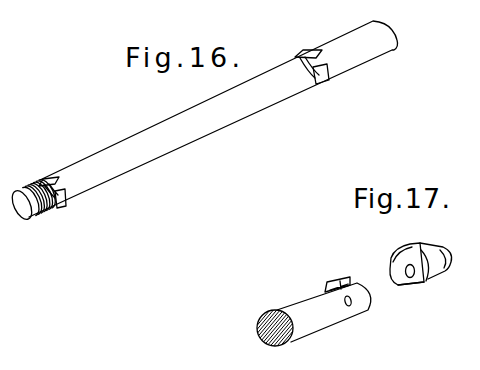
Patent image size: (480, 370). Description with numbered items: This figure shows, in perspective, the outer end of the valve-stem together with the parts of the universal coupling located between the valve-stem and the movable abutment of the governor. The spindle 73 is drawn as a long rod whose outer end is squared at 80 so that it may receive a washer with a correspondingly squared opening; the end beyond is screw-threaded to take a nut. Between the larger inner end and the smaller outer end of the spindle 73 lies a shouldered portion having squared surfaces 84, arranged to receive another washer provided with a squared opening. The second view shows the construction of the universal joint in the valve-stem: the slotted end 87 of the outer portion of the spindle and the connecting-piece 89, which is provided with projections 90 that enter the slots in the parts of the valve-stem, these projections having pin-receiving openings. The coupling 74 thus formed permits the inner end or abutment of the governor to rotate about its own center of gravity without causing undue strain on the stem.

In FIG. 16, the spindle 73 is at (191, 138).
In FIG. 16, the squared outer end 80 is at (58, 207).
In FIG. 16, the squared surfaces 84 is at (321, 85).
In FIG. 17, the slotted end of the outer portion of the spindle 87 is at (335, 279).
In FIG. 17, the fitting block 74 is at (416, 275).
In FIG. 17, the connecting-piece 89 is at (435, 275).
In FIG. 17, the projections 90 is at (400, 287).